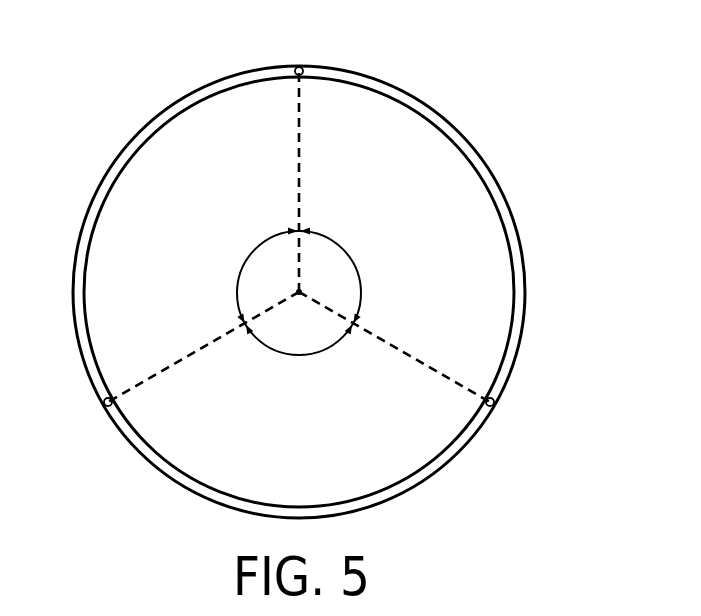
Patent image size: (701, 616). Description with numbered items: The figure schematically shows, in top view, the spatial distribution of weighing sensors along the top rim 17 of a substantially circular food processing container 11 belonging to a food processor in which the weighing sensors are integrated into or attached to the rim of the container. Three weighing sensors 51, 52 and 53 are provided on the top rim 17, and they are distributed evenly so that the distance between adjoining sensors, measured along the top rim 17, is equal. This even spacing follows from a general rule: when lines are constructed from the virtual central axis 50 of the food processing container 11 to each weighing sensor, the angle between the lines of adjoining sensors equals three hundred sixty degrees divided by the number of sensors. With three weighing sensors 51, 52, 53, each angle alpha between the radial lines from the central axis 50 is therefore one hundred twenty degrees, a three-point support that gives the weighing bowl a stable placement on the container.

The food processing container 11 is at (313, 260).
The top rim 17 is at (108, 181).
The virtual central axis 50 is at (297, 291).
The weighing sensor 51 is at (299, 66).
The weighing sensor 52 is at (104, 404).
The weighing sensor 53 is at (494, 406).